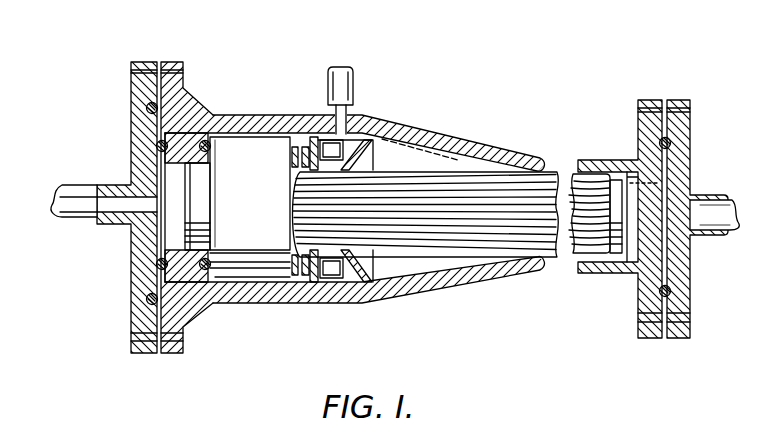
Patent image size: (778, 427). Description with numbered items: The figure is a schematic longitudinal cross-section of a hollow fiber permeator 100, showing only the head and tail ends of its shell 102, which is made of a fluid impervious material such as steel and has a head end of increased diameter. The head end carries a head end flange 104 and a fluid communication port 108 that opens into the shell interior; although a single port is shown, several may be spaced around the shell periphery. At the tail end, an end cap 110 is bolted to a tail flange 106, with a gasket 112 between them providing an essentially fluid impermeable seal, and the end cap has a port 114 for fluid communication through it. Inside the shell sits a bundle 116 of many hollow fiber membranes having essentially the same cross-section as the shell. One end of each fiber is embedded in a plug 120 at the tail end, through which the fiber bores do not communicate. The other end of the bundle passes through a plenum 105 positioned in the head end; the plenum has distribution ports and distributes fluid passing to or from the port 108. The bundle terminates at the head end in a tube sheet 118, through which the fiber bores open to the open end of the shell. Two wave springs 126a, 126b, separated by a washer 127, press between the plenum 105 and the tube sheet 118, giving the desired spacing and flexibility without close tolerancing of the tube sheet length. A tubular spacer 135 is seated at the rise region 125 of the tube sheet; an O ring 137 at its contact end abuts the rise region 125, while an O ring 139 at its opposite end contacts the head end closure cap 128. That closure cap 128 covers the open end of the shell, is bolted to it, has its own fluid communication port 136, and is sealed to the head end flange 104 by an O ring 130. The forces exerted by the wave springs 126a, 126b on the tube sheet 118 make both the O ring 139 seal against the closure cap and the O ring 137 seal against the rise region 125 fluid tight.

The permeator 100 is at (418, 119).
The shell 102 is at (458, 140).
The head end flange 104 is at (172, 62).
The plenum 105 is at (372, 262).
The tail flange 106 is at (653, 100).
The fluid communication port 108 is at (352, 80).
The end cap 110 is at (678, 100).
The gasket 112 is at (659, 292).
The port 114 is at (712, 197).
The bundle 116 is at (423, 220).
The tube sheet 118 is at (243, 157).
The plug 120 is at (617, 180).
The rise region 125 is at (217, 251).
The wave spring 126a is at (283, 262).
The wave spring 126b is at (320, 262).
The washer 127 is at (300, 276).
The head end closure cap 128 is at (131, 246).
The O ring 130 is at (148, 106).
The tubular spacer 135 is at (185, 133).
The fluid communication port 136 is at (85, 187).
The O ring 137 is at (214, 145).
The O ring 139 is at (157, 144).